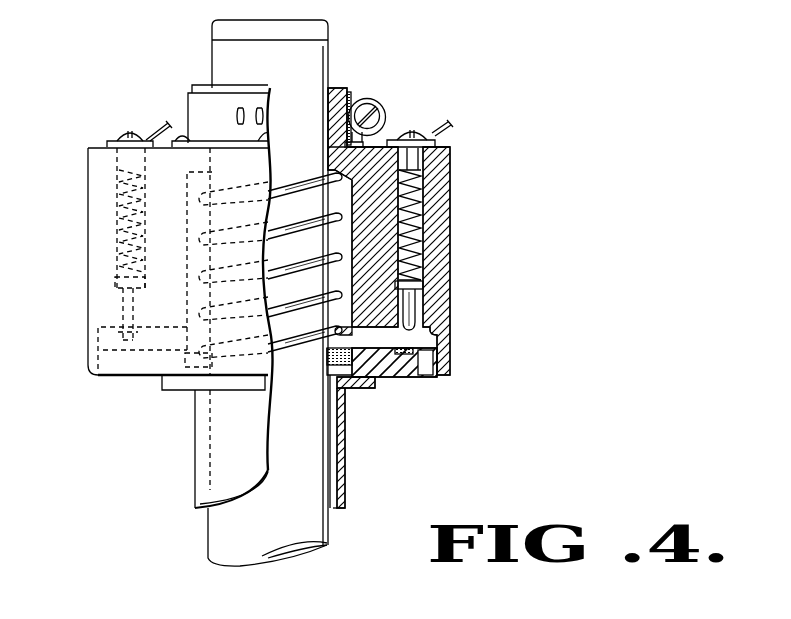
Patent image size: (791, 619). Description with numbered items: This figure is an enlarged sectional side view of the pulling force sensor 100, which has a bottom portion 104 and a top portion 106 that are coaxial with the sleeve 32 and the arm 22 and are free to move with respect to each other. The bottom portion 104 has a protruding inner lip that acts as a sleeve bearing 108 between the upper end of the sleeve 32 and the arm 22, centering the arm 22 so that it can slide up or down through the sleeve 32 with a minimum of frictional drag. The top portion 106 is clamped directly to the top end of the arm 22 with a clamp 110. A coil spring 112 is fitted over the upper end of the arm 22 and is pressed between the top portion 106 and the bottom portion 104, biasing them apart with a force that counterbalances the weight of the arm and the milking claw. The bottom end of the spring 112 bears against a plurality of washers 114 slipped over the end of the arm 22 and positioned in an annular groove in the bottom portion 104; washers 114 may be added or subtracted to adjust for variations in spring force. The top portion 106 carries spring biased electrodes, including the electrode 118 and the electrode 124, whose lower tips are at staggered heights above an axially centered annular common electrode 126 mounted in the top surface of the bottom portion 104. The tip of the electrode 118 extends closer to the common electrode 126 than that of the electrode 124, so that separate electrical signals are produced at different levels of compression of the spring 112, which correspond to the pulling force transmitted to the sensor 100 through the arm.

The arm 22 is at (327, 60).
The sleeve 32 is at (346, 495).
The pulling force sensor 100 is at (460, 167).
The bottom portion 104 is at (420, 380).
The top portion 106 is at (450, 272).
The sleeve bearing 108 is at (343, 415).
The clamp 110 is at (375, 102).
The coil spring 112 is at (306, 342).
The washers 114 is at (327, 362).
The electrode 118 is at (90, 341).
The electrode 124 is at (414, 315).
The common electrode 126 is at (414, 353).